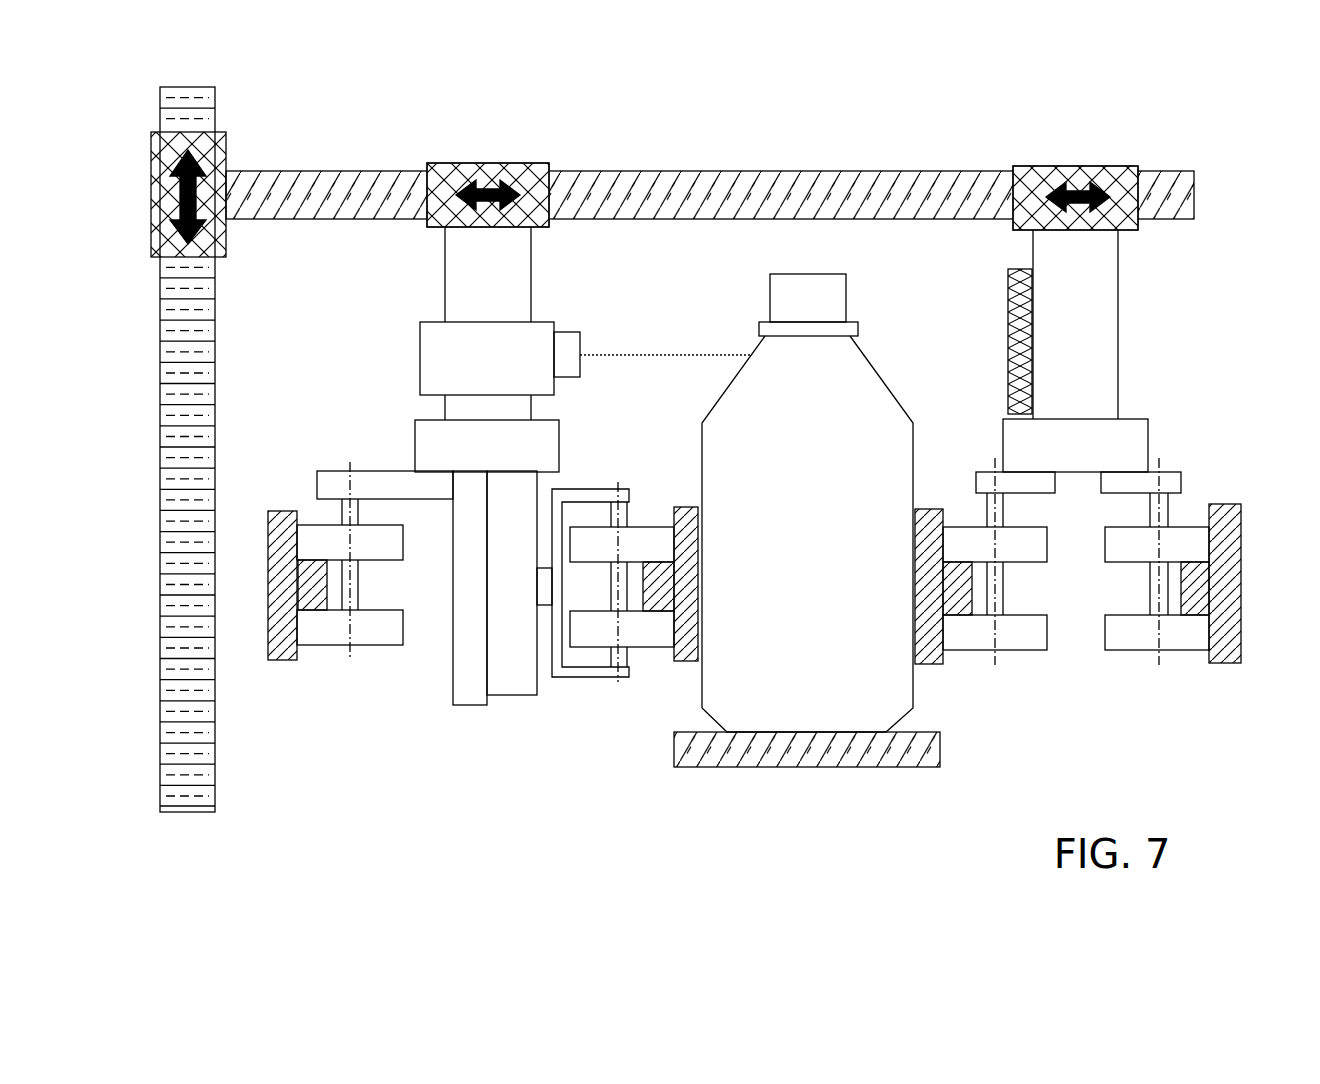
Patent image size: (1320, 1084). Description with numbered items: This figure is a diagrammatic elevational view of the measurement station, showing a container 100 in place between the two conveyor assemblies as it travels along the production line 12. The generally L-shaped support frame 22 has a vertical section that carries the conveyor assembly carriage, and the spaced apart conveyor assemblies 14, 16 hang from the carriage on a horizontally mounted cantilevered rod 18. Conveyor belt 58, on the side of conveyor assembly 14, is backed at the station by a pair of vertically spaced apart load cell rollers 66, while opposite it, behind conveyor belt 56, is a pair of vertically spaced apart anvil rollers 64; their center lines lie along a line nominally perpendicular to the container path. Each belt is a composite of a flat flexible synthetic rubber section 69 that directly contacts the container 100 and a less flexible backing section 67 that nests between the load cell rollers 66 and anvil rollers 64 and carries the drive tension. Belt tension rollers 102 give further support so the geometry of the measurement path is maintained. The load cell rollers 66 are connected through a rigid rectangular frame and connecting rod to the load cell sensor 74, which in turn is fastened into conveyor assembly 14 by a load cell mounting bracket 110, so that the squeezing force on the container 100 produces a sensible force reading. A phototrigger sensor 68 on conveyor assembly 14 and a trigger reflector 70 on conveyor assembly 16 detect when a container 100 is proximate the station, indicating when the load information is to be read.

The production line 12 is at (848, 778).
The conveyor assembly 14 is at (438, 291).
The conveyor assembly 16 is at (1135, 332).
The cantilevered rod 18 is at (721, 172).
The support frame 22 is at (215, 405).
The conveyor belt 56 is at (1225, 664).
The conveyor belt 58 is at (283, 660).
The anvil rollers 64 is at (1035, 550).
The load cell rollers 66 is at (655, 538).
The backing section 67 is at (957, 603).
The phototrigger sensor 68 is at (583, 397).
The flexible section 69 is at (925, 508).
The trigger reflector 70 is at (1030, 320).
The load cell sensor 74 is at (520, 682).
The container 100 is at (807, 503).
The belt tension rollers 102 is at (375, 640).
The load cell mounting bracket 110 is at (465, 690).